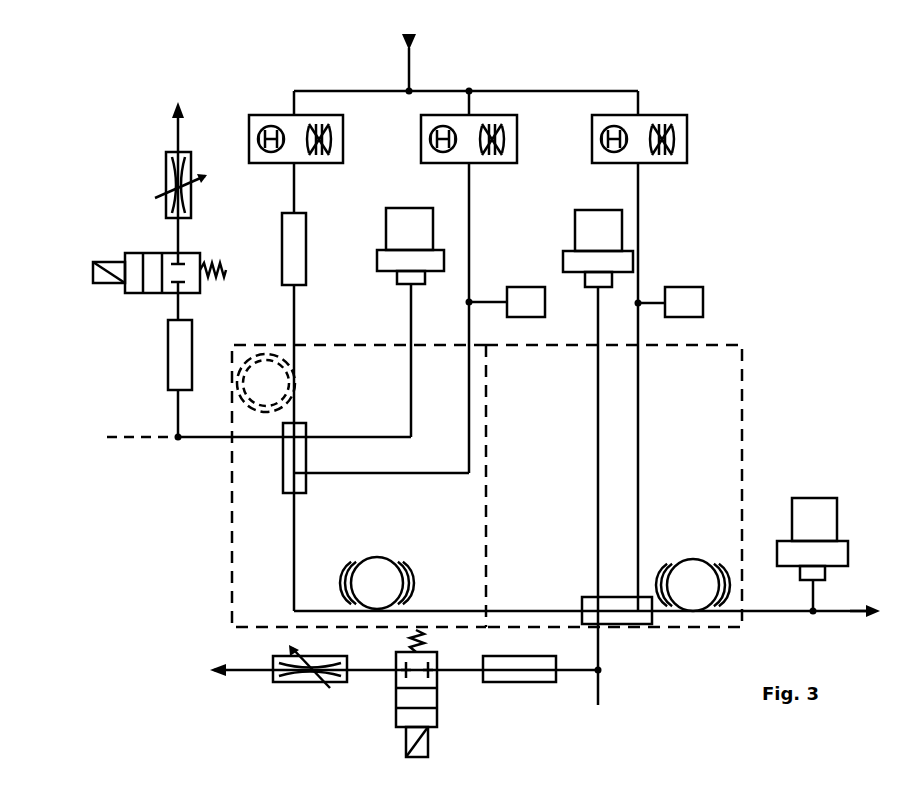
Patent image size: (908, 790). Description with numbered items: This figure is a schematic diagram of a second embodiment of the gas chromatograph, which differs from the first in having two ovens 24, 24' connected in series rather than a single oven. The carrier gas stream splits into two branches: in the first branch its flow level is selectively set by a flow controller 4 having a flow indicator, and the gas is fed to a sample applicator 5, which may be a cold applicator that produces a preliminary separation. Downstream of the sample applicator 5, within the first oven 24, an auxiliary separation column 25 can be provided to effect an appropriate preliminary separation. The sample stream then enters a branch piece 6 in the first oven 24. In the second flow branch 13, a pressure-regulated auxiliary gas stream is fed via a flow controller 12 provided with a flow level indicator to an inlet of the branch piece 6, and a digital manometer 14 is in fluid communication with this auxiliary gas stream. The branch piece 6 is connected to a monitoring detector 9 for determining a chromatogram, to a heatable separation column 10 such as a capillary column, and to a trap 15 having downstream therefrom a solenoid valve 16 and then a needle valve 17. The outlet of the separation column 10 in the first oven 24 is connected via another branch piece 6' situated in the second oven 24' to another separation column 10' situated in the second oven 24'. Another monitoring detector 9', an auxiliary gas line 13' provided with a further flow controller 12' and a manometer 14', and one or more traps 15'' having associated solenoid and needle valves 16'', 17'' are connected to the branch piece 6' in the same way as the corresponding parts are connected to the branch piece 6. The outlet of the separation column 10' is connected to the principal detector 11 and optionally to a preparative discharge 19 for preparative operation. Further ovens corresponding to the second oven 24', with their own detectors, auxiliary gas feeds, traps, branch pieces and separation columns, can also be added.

The flow controller 4 is at (249, 118).
The sample applicator 5 is at (282, 228).
The branch piece 6 is at (276, 469).
The branch piece 6' is at (591, 598).
The monitoring detector 9 is at (312, 319).
The monitoring detector 9' is at (586, 453).
The separation column 10 is at (377, 568).
The separation column 10' is at (693, 570).
The principal detector 11 is at (792, 502).
The flow controller 12 is at (469, 102).
The flow controller 12' is at (639, 102).
The second flow branch 13 is at (402, 318).
The auxiliary gas line 13' is at (667, 387).
The digital manometer 14 is at (507, 285).
The manometer 14' is at (670, 285).
The trap 15 is at (135, 355).
The trap 15'' is at (504, 681).
The solenoid valve 16 is at (152, 261).
The solenoid valve 16'' is at (394, 693).
The needle valve 17 is at (162, 180).
The needle valve 17'' is at (290, 675).
The preparative discharge 19 is at (845, 614).
The oven 24 is at (333, 486).
The oven 24' is at (631, 486).
The auxiliary separation column 25 is at (296, 397).